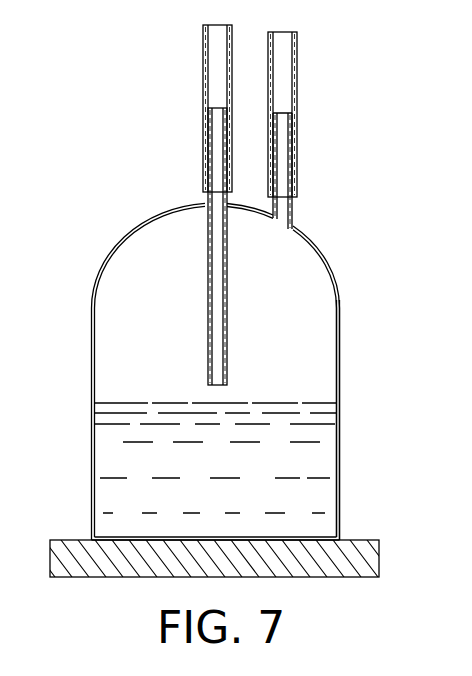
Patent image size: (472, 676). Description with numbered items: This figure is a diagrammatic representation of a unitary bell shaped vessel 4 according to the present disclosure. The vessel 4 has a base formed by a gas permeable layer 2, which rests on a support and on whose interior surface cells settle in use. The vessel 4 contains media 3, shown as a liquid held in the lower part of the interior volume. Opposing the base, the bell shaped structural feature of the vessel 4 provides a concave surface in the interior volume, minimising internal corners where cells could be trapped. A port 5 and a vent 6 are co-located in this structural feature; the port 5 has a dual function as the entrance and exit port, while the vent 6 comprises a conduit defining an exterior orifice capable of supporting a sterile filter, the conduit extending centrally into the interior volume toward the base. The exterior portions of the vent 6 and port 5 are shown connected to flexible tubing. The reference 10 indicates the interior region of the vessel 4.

The gas permeable layer 2 is at (379, 560).
The media 3 is at (325, 455).
The vessel 4 is at (340, 340).
The port 5 is at (297, 141).
The vent 6 is at (205, 152).
The vessel 10 is at (115, 347).